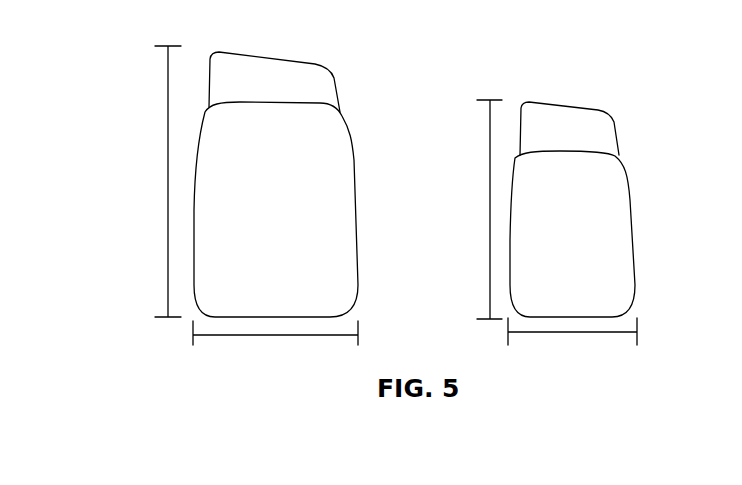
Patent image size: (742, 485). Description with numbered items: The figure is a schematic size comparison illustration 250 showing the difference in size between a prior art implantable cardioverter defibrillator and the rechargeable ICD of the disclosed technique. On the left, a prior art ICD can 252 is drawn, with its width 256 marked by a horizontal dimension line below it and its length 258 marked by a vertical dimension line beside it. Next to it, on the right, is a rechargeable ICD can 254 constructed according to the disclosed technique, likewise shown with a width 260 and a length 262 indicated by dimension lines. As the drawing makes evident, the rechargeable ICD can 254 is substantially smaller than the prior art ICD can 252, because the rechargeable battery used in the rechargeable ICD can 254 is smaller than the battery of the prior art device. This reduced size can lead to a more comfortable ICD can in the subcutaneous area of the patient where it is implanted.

The size comparison illustration 250 is at (594, 66).
The prior art ICD can 252 is at (352, 152).
The rechargeable ICD can 254 is at (633, 232).
The width 256 is at (285, 335).
The length 258 is at (168, 155).
The width 260 is at (583, 332).
The length 262 is at (488, 202).